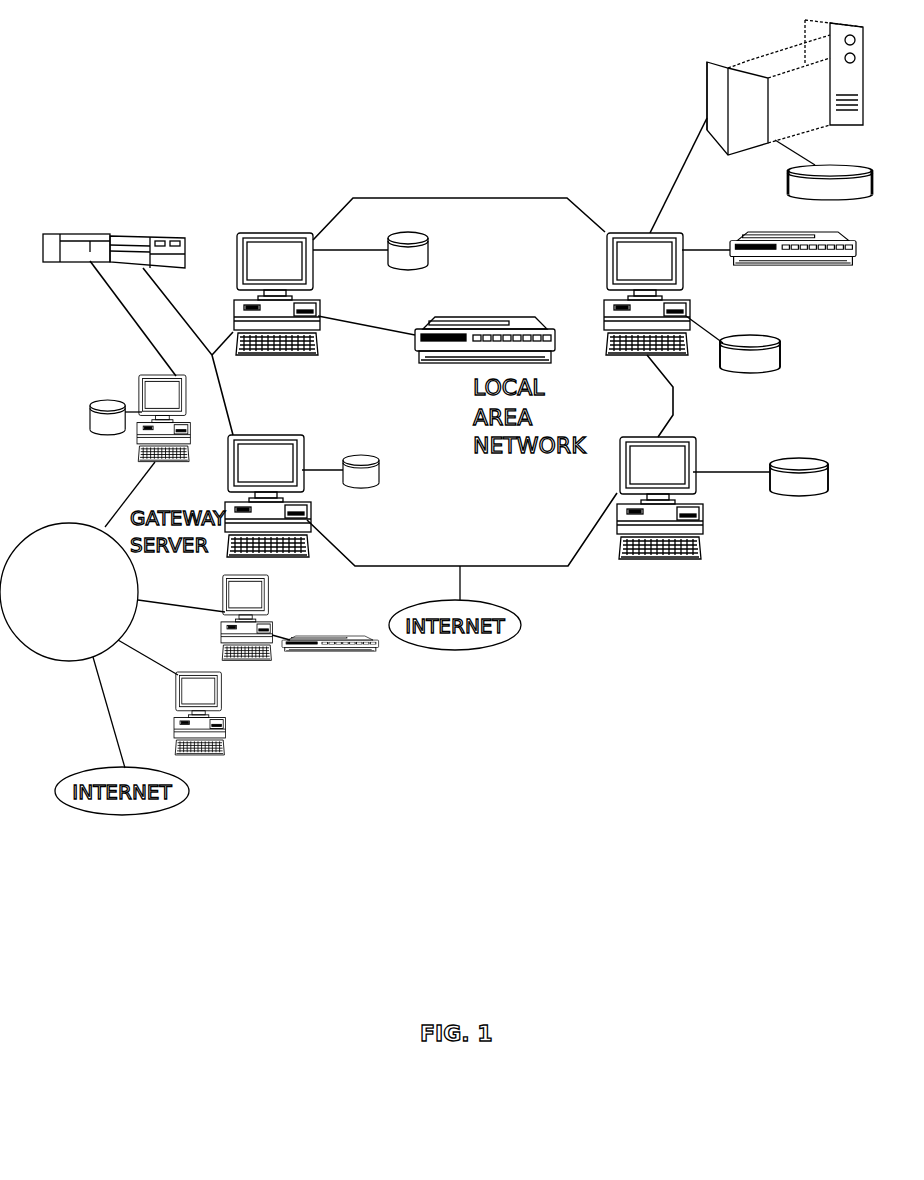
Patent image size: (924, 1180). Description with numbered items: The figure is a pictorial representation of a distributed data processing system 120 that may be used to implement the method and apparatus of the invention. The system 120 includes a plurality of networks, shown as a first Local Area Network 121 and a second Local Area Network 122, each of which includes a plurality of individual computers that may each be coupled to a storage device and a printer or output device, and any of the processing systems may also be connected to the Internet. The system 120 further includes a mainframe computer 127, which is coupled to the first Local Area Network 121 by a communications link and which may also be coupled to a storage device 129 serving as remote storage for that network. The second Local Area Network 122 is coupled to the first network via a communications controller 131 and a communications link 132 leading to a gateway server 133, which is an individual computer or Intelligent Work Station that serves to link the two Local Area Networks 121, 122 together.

The distributed data processing system 120 is at (462, 172).
The local area network 121 is at (473, 548).
The second local area network 122 is at (69, 566).
The mainframe computer 127 is at (785, 83).
The storage device 129 is at (835, 165).
The communications controller 131 is at (133, 230).
The communications link 132 is at (119, 318).
The gateway server 133 is at (131, 440).